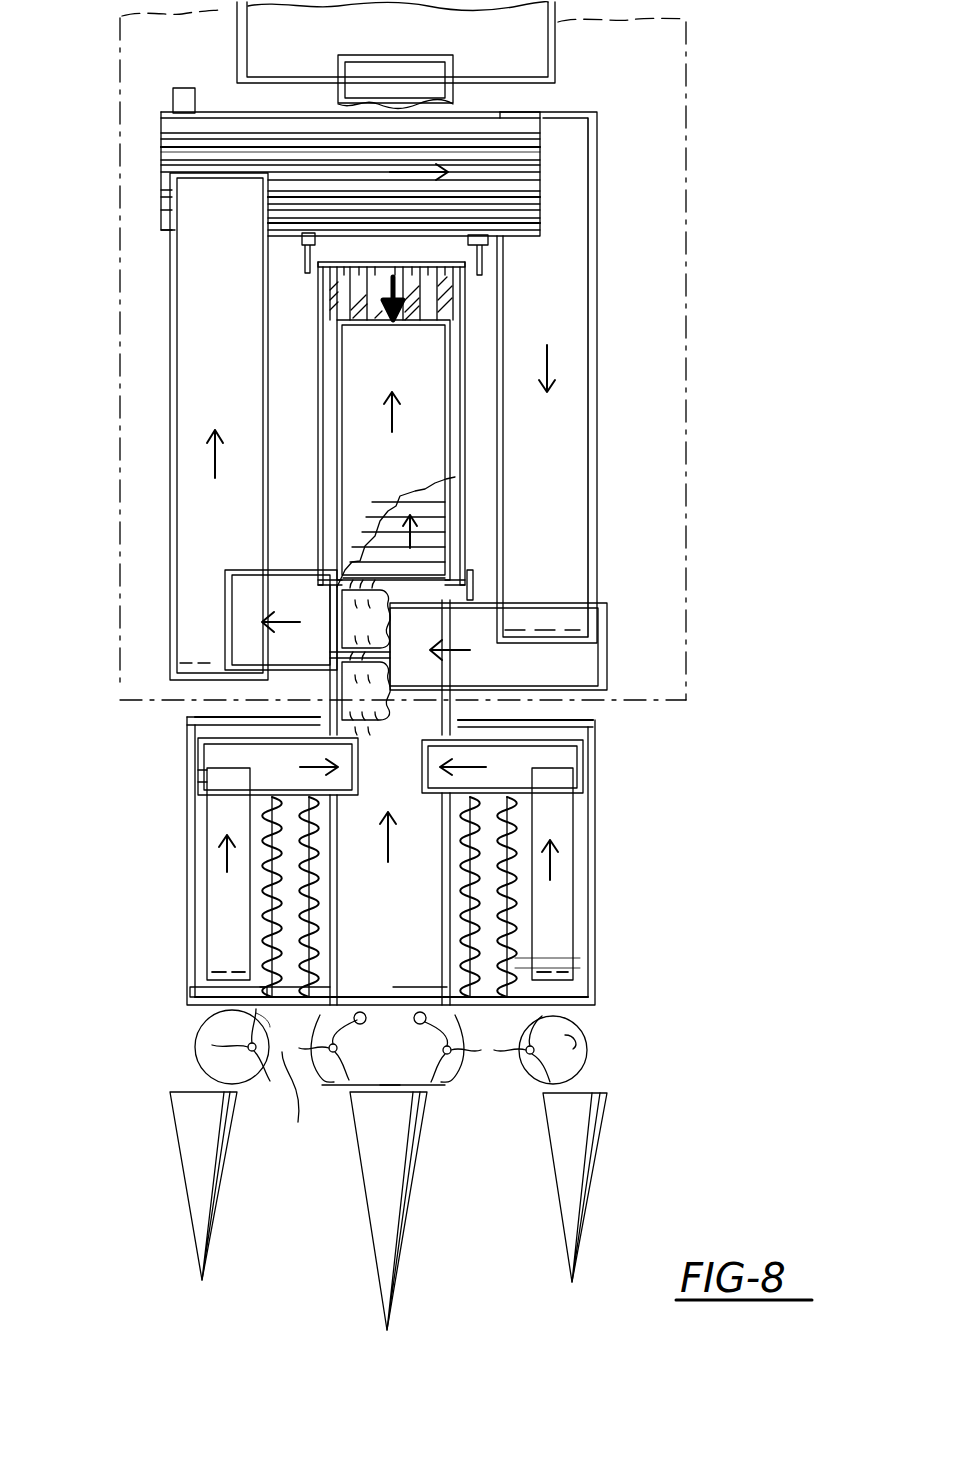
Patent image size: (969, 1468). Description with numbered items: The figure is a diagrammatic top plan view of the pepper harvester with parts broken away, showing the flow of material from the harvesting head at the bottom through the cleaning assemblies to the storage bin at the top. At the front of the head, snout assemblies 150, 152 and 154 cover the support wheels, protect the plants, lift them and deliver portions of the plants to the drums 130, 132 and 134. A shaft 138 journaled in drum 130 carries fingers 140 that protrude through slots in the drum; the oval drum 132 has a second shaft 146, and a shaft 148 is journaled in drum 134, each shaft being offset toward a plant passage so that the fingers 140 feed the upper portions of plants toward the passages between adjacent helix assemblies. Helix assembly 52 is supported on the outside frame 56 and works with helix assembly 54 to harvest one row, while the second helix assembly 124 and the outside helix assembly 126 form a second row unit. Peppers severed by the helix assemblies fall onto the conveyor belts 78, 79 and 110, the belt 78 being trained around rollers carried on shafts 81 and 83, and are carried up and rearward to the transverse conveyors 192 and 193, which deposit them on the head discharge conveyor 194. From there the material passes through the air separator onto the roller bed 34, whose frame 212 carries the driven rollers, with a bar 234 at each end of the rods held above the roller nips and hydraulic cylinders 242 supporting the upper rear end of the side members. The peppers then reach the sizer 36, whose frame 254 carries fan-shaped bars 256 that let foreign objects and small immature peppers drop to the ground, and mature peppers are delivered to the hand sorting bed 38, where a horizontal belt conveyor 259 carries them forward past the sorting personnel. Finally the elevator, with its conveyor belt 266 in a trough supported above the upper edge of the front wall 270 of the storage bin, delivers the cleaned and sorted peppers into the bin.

The front wall 270 is at (286, 73).
The conveyor belt 266 is at (435, 55).
The sizer 36 is at (208, 112).
The bars 256 is at (180, 143).
The frame 254 is at (172, 95).
The bar 234 is at (303, 243).
The hydraulic cylinders 242 is at (483, 246).
The frame 212 is at (468, 300).
The roller bed 34 is at (468, 330).
The horizontal belt conveyor 259 is at (580, 382).
The hand sorting bed 38 is at (597, 460).
The head discharge conveyor 194 is at (318, 714).
The transverse conveyor 192 is at (207, 750).
The transverse conveyor 193 is at (572, 760).
The shaft 83 is at (207, 778).
The outside frame 56 is at (187, 853).
The conveyor belt 78 is at (222, 910).
The conveyor belt 79 is at (562, 910).
The helix assembly 54 is at (320, 863).
The second helix assembly 124 is at (460, 907).
The conveyor belt 110 is at (362, 815).
The helix assembly 52 is at (190, 987).
The shaft 81 is at (207, 972).
The outside helix assembly 126 is at (512, 953).
The drum 130 is at (197, 1048).
The shaft 138 is at (215, 1062).
The drum 132 is at (345, 1088).
The fingers 140 is at (289, 1105).
The second shaft 146 is at (465, 1067).
The shaft 148 is at (510, 1073).
The drum 134 is at (587, 1075).
The snout assembly 150 is at (193, 1238).
The snout assembly 152 is at (385, 1277).
The snout assembly 154 is at (587, 1206).